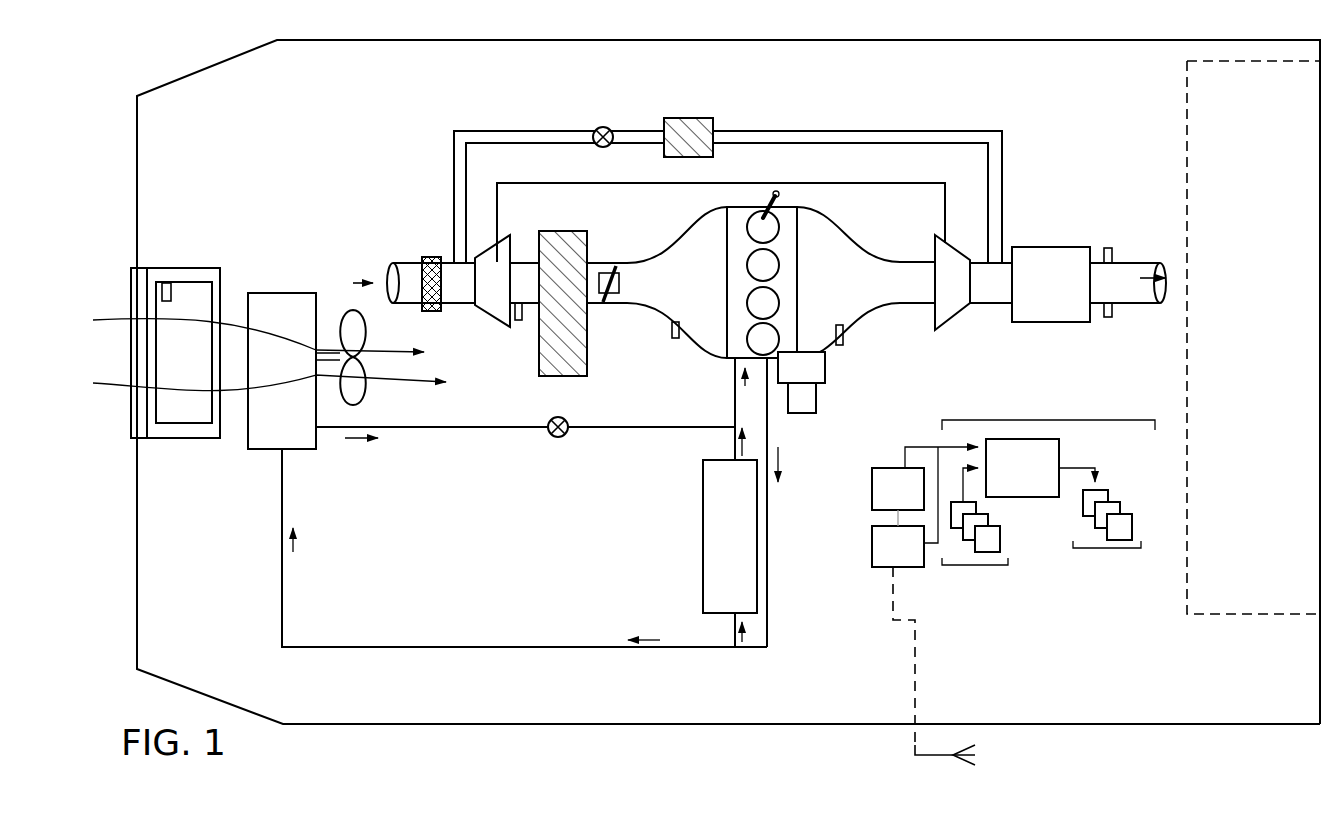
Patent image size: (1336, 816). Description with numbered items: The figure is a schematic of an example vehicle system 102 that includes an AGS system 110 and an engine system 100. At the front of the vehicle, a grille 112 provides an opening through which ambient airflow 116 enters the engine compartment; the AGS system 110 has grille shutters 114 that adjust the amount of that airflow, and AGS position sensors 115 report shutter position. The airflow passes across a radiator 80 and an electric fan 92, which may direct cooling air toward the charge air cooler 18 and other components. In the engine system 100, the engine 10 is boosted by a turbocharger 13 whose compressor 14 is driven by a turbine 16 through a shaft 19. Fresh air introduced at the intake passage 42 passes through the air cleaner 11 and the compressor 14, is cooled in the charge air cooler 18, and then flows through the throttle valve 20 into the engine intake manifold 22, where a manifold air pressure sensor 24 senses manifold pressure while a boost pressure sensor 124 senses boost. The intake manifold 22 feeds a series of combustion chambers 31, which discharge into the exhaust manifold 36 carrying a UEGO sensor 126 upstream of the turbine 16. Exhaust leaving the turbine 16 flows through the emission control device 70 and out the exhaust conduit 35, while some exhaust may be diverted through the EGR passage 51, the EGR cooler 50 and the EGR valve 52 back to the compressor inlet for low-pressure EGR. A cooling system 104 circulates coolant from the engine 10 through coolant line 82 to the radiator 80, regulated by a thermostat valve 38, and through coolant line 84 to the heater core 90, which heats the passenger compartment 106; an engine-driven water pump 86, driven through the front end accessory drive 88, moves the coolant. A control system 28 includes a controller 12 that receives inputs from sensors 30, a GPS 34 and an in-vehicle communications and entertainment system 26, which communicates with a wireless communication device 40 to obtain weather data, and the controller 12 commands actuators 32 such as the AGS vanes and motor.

The engine 10 is at (798, 270).
The air cleaner 11 is at (432, 257).
The controller 12 is at (1022, 468).
The turbocharger 13 is at (538, 209).
The compressor 14 is at (492, 281).
The turbine 16 is at (952, 282).
The charge air cooler 18 is at (563, 231).
The shaft 19 is at (876, 183).
The throttle valve 20 is at (619, 287).
The engine intake manifold 22 is at (677, 282).
The manifold air pressure sensor 24 is at (672, 330).
The in-vehicle communications and entertainment system 26 is at (905, 507).
The control system 28 is at (1049, 420).
The sensors 30 is at (976, 542).
The combustion chambers 31 is at (771, 226).
The actuators 32 is at (1108, 533).
The GPS 34 is at (925, 478).
The exhaust conduit 35 is at (1147, 262).
The exhaust manifold 36 is at (866, 283).
The thermostat valve 38 is at (560, 438).
The wireless communication device 40 is at (976, 763).
The intake passage 42 is at (420, 311).
The EGR cooler 50 is at (695, 118).
The EGR passage 51 is at (790, 131).
The EGR valve 52 is at (608, 128).
The emission control device 70 is at (1040, 247).
The radiator 80 is at (282, 371).
The coolant line 82 is at (655, 427).
The coolant line 84 is at (735, 453).
The engine-driven water pump 86 is at (817, 401).
The front end accessory drive 88 is at (826, 370).
The heater core 90 is at (730, 536).
The electric fan 92 is at (357, 404).
The engine system 100 is at (1082, 90).
The vehicle system 102 is at (700, 40).
The cooling system 104 is at (812, 567).
The passenger compartment 106 is at (1253, 337).
The AGS system 110 is at (175, 438).
The grille 112 is at (130, 428).
The grille shutters 114 is at (174, 325).
The AGS position sensors 115 is at (166, 292).
The ambient airflow 116 is at (100, 319).
The boost pressure sensor 124 is at (521, 320).
The UEGO sensor 126 is at (843, 336).